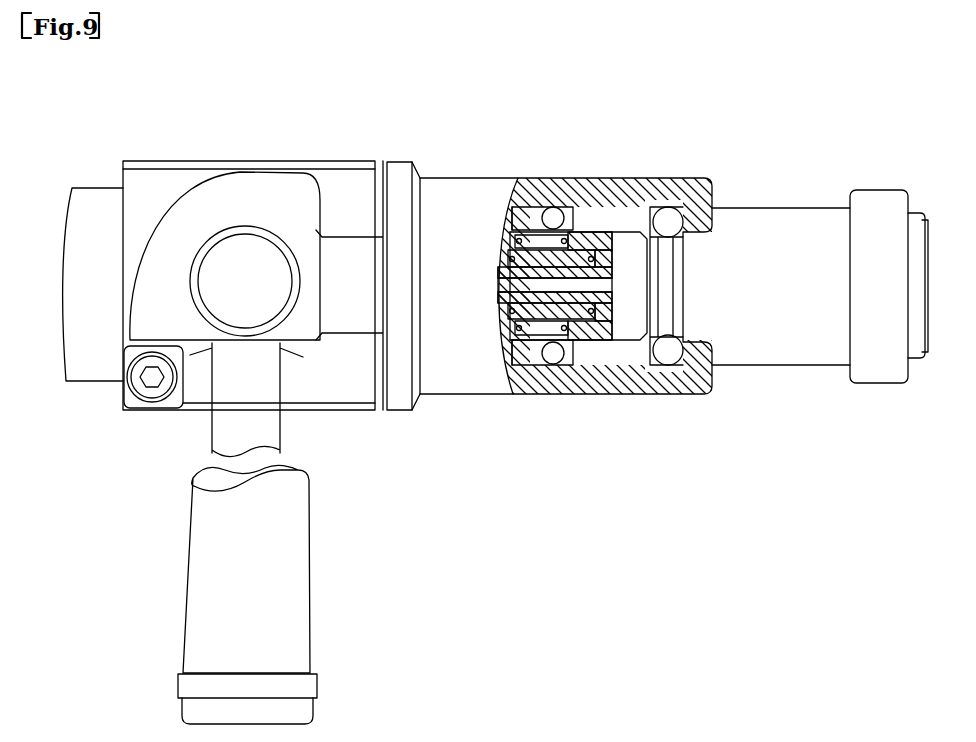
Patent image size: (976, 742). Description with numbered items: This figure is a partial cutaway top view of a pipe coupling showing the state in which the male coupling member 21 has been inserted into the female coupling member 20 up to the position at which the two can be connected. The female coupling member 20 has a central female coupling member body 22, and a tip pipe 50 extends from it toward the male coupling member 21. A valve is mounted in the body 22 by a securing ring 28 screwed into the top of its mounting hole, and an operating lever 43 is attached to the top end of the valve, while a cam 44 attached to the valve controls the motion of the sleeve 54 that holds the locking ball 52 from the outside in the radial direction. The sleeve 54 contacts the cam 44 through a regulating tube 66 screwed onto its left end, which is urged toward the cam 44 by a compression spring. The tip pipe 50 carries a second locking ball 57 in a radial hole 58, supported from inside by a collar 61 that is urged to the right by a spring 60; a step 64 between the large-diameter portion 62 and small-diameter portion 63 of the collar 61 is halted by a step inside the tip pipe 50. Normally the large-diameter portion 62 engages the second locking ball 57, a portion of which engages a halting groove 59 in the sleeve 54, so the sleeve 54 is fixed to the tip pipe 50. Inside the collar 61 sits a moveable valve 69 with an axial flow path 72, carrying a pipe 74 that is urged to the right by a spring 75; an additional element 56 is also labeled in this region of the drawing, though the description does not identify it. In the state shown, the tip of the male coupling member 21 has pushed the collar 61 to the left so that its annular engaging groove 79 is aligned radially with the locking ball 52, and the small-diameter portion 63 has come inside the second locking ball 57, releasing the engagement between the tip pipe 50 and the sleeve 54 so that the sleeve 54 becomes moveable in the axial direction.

The female coupling member 20 is at (134, 154).
The male coupling member 21 is at (815, 205).
The female coupling member body 22 is at (166, 170).
The securing ring 28 is at (205, 352).
The operating lever 43 is at (200, 567).
The cam 44 is at (240, 203).
The tip pipe 50 is at (610, 272).
The locking ball 52 is at (640, 238).
The sleeve 54 is at (468, 188).
The lower plate 56 is at (578, 332).
The second locking ball 57 is at (560, 248).
The hole 58 is at (552, 364).
The halting groove 59 is at (553, 207).
The spring 60 is at (520, 348).
The collar 61 is at (575, 262).
The large-diameter portion 62 is at (531, 207).
The small-diameter portion 63 is at (590, 250).
The step 64 is at (527, 332).
The regulating tube 66 is at (410, 210).
The moveable valve 69 is at (507, 302).
The axial flow path 72 is at (498, 280).
The pipe 74 is at (590, 327).
The spring 75 is at (515, 325).
The annular engaging groove 79 is at (672, 260).